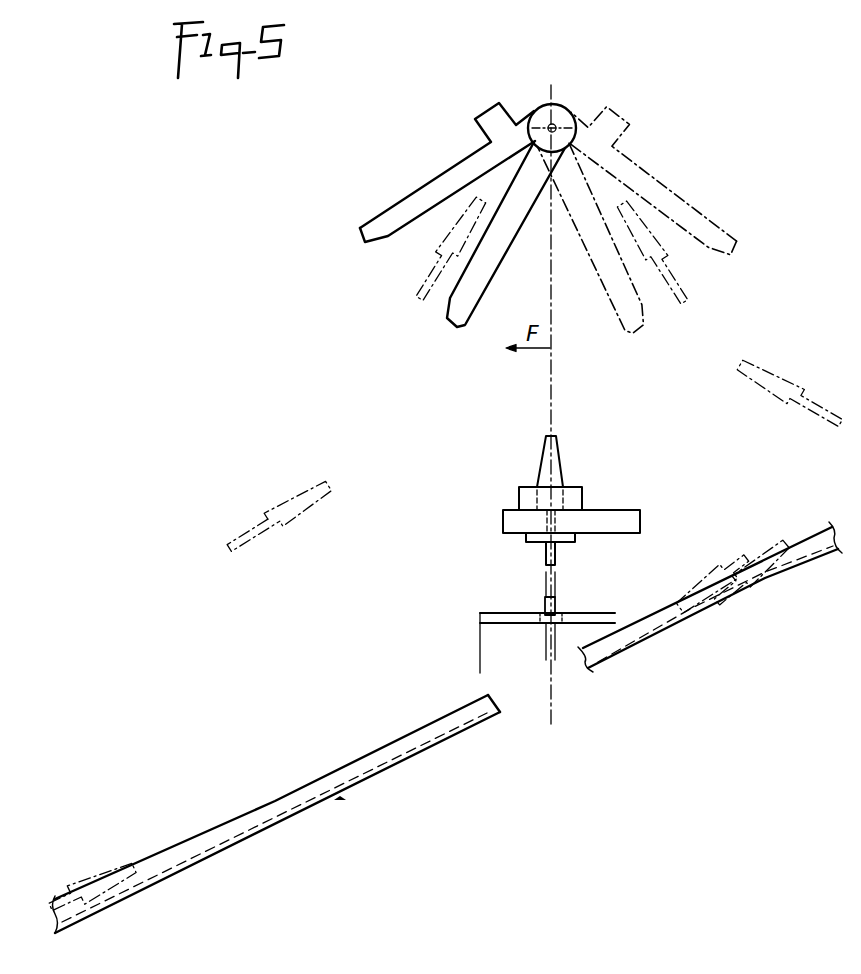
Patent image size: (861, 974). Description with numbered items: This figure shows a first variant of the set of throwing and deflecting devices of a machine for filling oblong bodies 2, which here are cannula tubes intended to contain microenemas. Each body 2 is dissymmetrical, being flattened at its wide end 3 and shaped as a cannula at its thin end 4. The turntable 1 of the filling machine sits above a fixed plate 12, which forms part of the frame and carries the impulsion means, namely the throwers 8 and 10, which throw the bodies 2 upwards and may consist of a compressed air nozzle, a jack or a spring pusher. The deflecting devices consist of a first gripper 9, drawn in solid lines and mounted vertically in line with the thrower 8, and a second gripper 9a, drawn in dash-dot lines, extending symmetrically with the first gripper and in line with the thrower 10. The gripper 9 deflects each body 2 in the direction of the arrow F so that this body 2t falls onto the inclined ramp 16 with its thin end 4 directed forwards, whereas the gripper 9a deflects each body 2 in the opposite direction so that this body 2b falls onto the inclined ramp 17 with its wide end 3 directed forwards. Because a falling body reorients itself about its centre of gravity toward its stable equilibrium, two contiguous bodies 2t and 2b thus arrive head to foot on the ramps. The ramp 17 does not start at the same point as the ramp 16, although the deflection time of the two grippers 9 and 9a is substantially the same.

The turntable 1 is at (626, 515).
The oblong body 2 is at (438, 250).
The body deflected opposite to arrow F 2b is at (780, 375).
The body deflected in direction of arrow F 2t is at (303, 517).
The wide end 3 is at (705, 578).
The thin end 4 is at (242, 541).
The thrower 8 is at (558, 607).
The first gripper 9 is at (488, 288).
The second gripper 9a is at (706, 203).
The thrower 10 is at (558, 608).
The fixed plate 12 is at (500, 613).
The inclined ramp 16 is at (320, 773).
The inclined ramp 17 is at (662, 633).